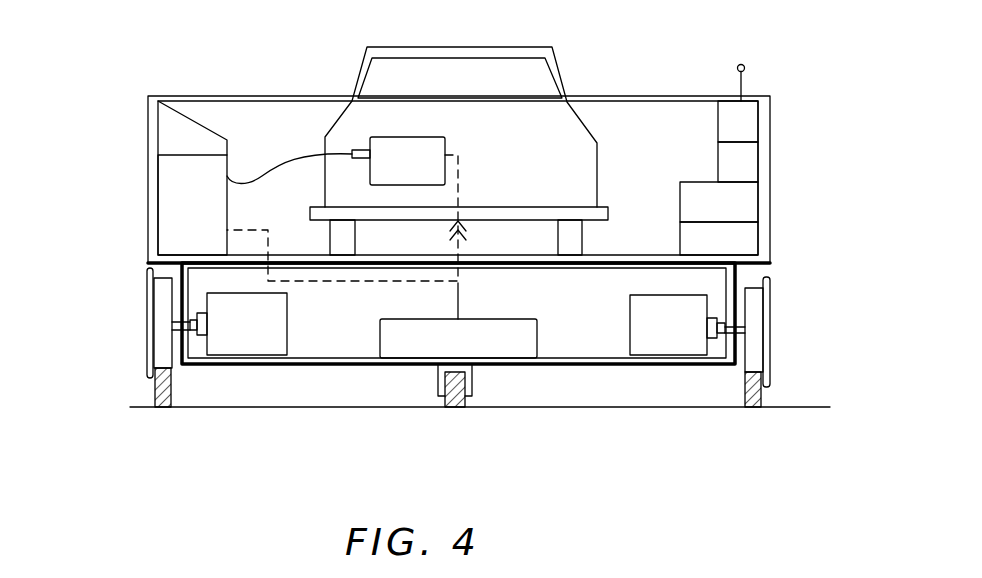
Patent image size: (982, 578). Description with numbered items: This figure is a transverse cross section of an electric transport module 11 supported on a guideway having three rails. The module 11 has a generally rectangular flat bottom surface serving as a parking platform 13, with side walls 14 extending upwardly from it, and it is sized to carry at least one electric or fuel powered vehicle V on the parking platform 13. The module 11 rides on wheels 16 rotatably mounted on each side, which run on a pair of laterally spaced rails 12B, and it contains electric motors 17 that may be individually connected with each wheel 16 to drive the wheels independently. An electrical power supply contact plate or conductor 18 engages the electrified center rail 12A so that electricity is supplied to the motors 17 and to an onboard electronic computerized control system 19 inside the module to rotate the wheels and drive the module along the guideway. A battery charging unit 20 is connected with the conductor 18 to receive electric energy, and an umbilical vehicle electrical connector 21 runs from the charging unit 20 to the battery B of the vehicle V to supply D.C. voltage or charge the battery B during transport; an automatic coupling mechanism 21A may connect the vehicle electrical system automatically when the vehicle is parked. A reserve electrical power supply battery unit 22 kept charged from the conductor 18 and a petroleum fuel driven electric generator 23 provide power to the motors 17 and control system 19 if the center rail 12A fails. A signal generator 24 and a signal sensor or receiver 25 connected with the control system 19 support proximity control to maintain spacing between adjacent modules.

The electric transport module 11 is at (104, 126).
The side walls 14 is at (150, 238).
The onboard electronic computerized control system 19 is at (198, 129).
The battery charging unit 20 is at (206, 217).
The umbilical vehicle electrical connector 21 is at (283, 170).
The vehicle V is at (459, 44).
The battery B is at (414, 177).
The automatic coupling mechanism 21A is at (470, 212).
The parking platform 13 is at (628, 255).
The signal sensor or receiver 25 is at (747, 122).
The signal generator 24 is at (752, 160).
The reserve electrical power supply battery unit 22 is at (737, 218).
The petroleum fuel driven electric generator 23 is at (737, 254).
The electric motors 17 is at (258, 338).
The wheels 16 is at (148, 358).
The laterally spaced rails 12B is at (172, 398).
The electrical power supply contact plate or conductor 18 is at (432, 380).
The center rail 12A is at (467, 400).